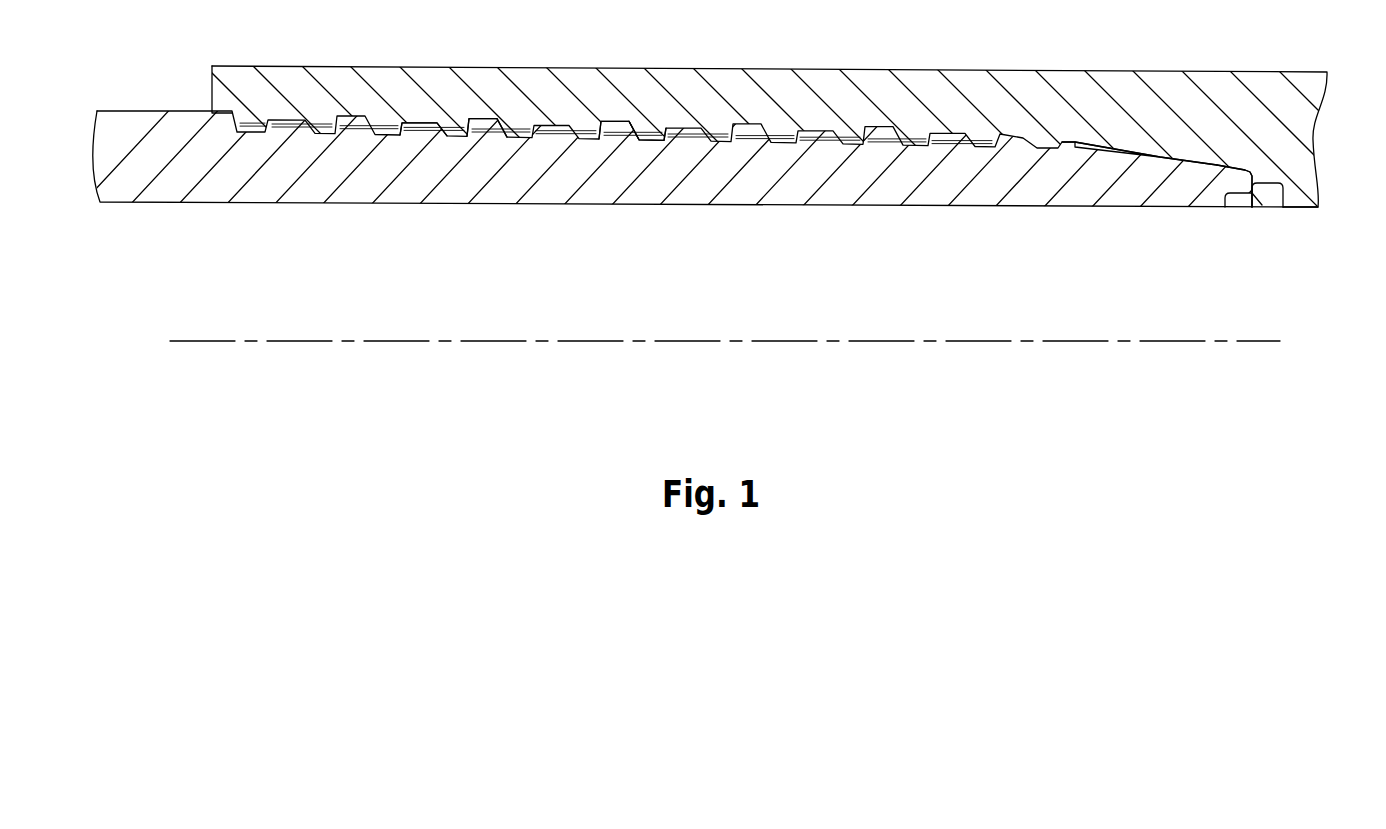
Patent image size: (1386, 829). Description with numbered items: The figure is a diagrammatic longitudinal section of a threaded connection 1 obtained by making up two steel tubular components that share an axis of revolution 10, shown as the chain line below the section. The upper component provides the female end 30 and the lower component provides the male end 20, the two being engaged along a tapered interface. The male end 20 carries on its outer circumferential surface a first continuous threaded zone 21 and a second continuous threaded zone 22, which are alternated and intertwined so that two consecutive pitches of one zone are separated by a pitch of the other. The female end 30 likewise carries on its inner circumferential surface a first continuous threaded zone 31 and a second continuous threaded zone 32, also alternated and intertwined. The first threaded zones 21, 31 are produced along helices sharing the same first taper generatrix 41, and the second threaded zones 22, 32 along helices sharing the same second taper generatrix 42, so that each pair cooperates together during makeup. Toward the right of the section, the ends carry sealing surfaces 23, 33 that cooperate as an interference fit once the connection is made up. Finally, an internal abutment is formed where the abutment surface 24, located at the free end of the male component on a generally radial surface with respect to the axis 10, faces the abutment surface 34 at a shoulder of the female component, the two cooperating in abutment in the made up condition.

The threaded connection 1 is at (732, 166).
The axis of revolution 10 is at (1052, 341).
The male end 20 is at (702, 182).
The first continuous threaded zone of the male end 21 is at (420, 141).
The second continuous threaded zone of the male end 22 is at (485, 144).
The sealing surface of the male end 23 is at (1212, 172).
The abutment surface of the male end 24 is at (1225, 209).
The female end 30 is at (835, 100).
The first continuous threaded zone of the female end 31 is at (455, 118).
The second continuous threaded zone of the female end 32 is at (383, 118).
The sealing surface of the female end 33 is at (1208, 160).
The abutment surface of the female end 34 is at (1278, 209).
The first taper generatrix 41 is at (652, 125).
The second taper generatrix 42 is at (612, 136).